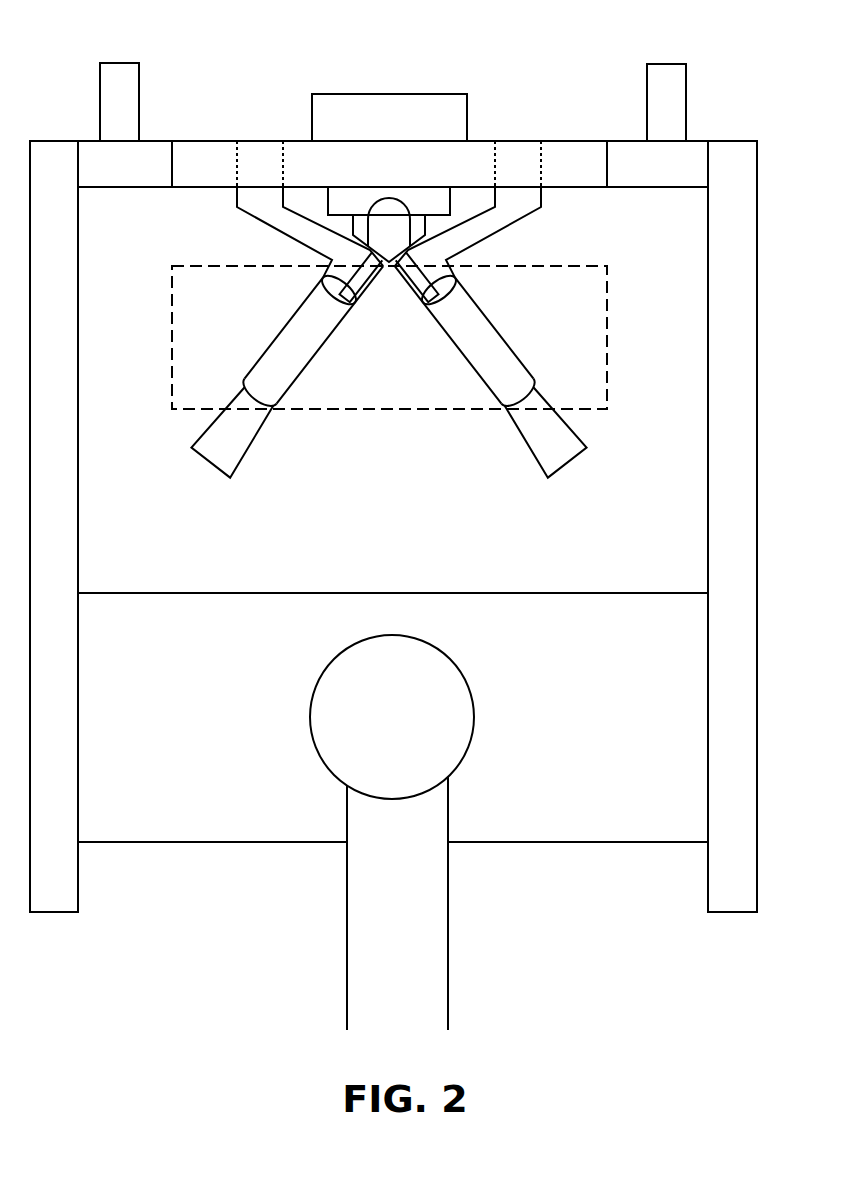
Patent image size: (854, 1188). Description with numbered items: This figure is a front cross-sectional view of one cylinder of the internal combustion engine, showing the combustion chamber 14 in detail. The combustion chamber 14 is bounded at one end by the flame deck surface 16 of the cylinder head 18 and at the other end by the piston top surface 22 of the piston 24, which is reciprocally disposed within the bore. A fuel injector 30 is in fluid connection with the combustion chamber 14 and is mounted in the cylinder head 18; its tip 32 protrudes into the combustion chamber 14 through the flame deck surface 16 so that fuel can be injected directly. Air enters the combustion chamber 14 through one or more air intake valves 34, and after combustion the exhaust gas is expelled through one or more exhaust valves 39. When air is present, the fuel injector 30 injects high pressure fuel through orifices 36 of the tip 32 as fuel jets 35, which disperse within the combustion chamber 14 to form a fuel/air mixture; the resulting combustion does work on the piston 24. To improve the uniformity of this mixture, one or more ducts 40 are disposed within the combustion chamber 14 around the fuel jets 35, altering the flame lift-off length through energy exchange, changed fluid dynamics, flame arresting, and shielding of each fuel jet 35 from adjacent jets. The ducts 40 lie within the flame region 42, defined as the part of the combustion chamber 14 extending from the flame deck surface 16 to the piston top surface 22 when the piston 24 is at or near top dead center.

The combustion chamber 14 is at (638, 530).
The flame deck surface 16 is at (546, 194).
The cylinder head 18 is at (193, 150).
The piston top surface 22 is at (445, 592).
The piston 24 is at (632, 753).
The fuel injector 30 is at (467, 123).
The tip 32 is at (358, 222).
The air intake valve 34 is at (125, 140).
The fuel jet 35 is at (355, 300).
The orifice 36 is at (389, 218).
The exhaust valve 39 is at (662, 138).
The duct 40 is at (172, 330).
The flame region 42 is at (655, 352).